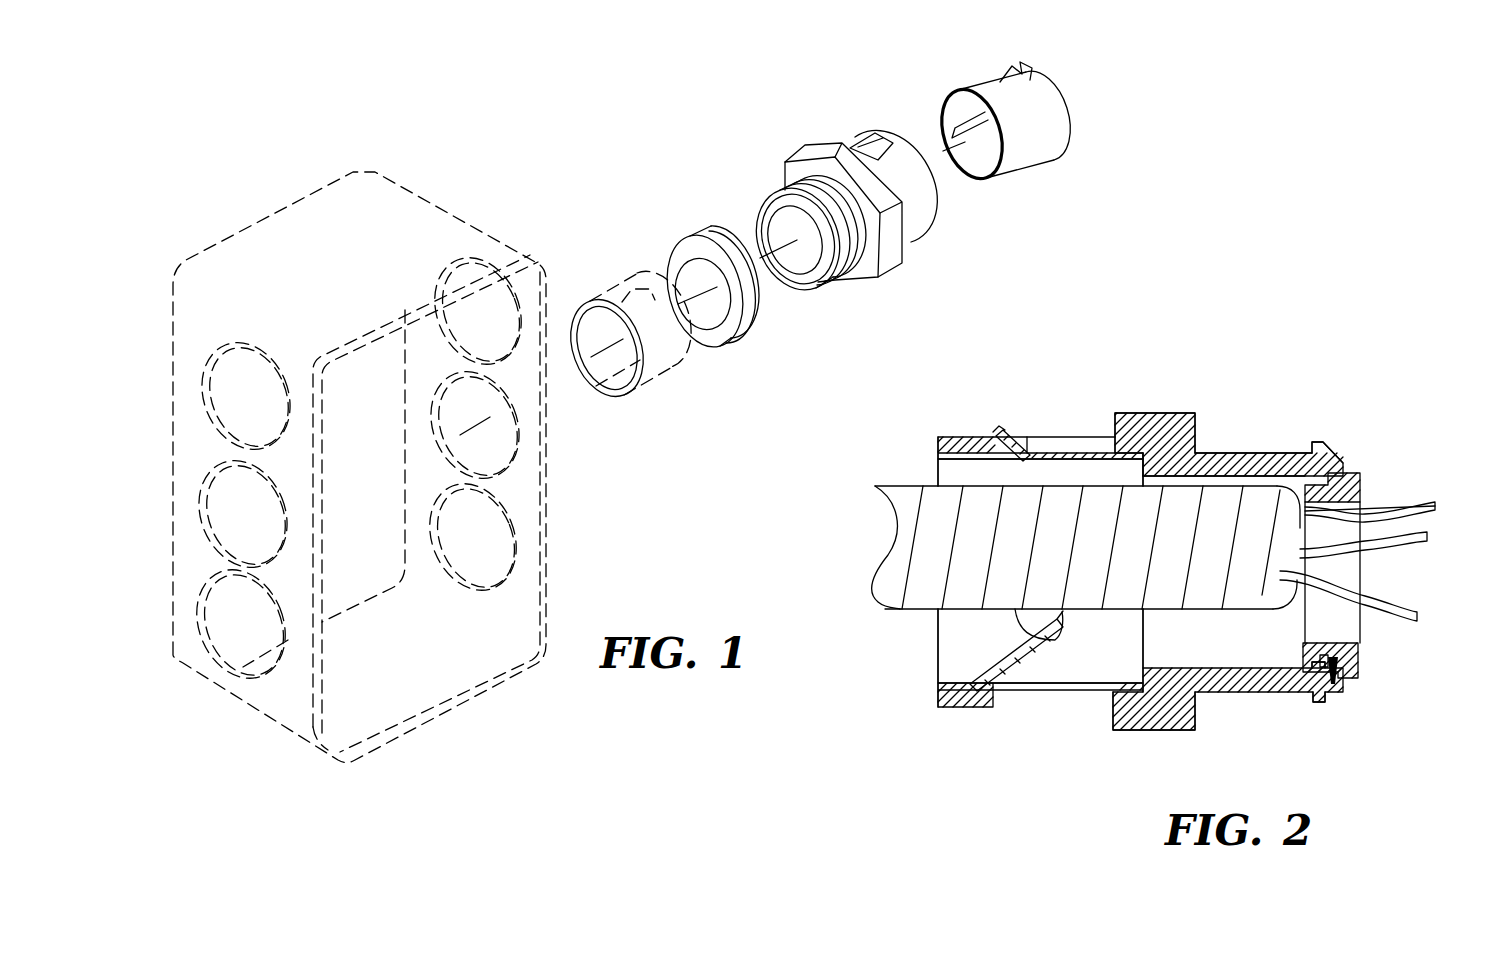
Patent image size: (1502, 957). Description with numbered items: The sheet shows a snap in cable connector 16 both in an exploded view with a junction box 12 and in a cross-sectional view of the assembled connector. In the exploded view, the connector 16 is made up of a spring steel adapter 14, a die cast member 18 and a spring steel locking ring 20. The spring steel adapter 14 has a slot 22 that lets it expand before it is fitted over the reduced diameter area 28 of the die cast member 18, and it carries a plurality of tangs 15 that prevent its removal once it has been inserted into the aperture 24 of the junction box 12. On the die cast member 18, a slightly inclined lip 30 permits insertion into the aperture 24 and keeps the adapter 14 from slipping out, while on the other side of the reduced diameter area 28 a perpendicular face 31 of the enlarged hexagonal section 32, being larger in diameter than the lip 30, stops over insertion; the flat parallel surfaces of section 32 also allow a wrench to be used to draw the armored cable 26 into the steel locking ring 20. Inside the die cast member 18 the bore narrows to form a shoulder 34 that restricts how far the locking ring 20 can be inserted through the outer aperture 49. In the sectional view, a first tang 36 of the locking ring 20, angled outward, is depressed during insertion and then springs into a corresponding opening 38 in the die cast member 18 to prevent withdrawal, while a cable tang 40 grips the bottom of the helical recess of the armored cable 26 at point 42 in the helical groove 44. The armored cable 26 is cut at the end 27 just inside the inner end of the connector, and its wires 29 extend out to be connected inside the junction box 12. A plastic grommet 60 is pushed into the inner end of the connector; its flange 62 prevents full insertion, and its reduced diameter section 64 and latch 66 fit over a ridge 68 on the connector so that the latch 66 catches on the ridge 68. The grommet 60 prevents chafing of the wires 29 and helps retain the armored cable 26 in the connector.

In FIG. 1, the junction box 12 is at (453, 218).
In FIG. 1, the spring steel adapter 14 is at (648, 385).
In FIG. 2, the spring steel adapter 14 is at (1072, 698).
In FIG. 1, the tangs 15 is at (645, 298).
In FIG. 1, the snap in cable connector 16 is at (778, 108).
In FIG. 2, the snap in cable connector 16 is at (1226, 322).
In FIG. 1, the die cast member 18 is at (917, 237).
In FIG. 2, the die cast member 18 is at (1209, 436).
In FIG. 1, the spring steel locking ring 20 is at (1035, 150).
In FIG. 2, the spring steel locking ring 20 is at (1025, 692).
In FIG. 1, the slot 22 is at (607, 388).
In FIG. 1, the aperture 24 is at (495, 452).
In FIG. 2, the armored cable 26 is at (1228, 611).
In FIG. 2, the end 27 is at (1290, 572).
In FIG. 2, the reduced diameter area 28 is at (1238, 452).
In FIG. 2, the wires 29 is at (1430, 505).
In FIG. 2, the lip 30 is at (1332, 450).
In FIG. 2, the perpendicular face 31 is at (1195, 705).
In FIG. 2, the enlarged hexagonal section 32 is at (1138, 413).
In FIG. 2, the shoulder 34 is at (1143, 465).
In FIG. 1, the first tang 36 is at (1030, 68).
In FIG. 2, the first tang 36 is at (1002, 438).
In FIG. 1, the opening 38 is at (880, 152).
In FIG. 2, the opening 38 is at (1055, 437).
In FIG. 1, the cable tang 40 is at (957, 150).
In FIG. 2, the cable tang 40 is at (1022, 655).
In FIG. 2, the point 42 is at (1066, 614).
In FIG. 2, the helical groove 44 is at (885, 597).
In FIG. 2, the outer aperture 49 is at (936, 660).
In FIG. 1, the plastic grommet 60 is at (732, 333).
In FIG. 2, the plastic grommet 60 is at (1372, 480).
In FIG. 2, the flange 62 is at (1345, 680).
In FIG. 2, the reduced diameter section 64 is at (1330, 692).
In FIG. 2, the latch 66 is at (1305, 648).
In FIG. 2, the ridge 68 is at (1313, 625).